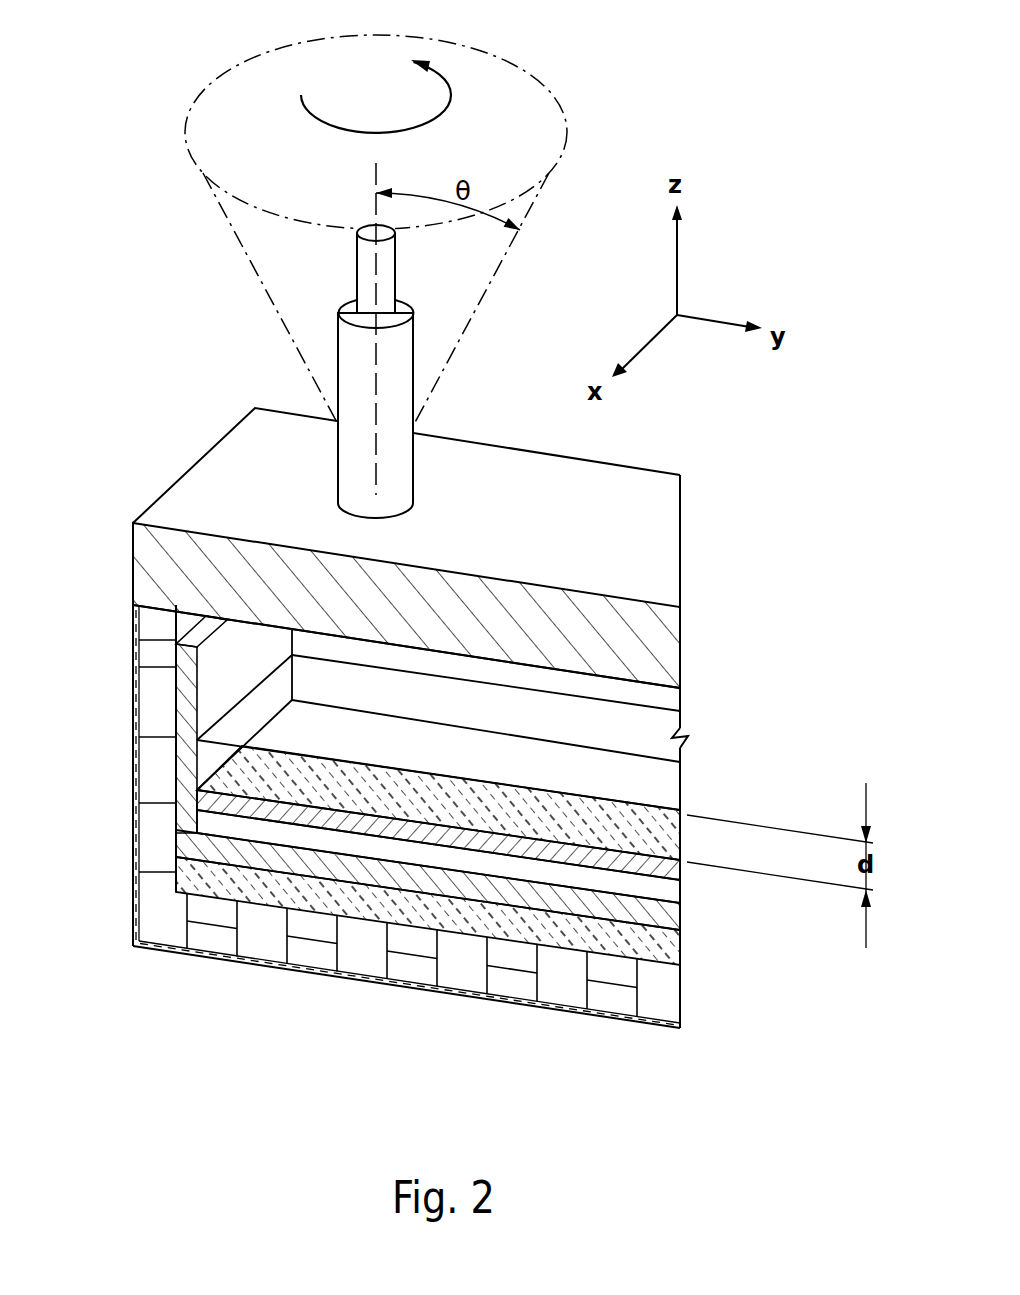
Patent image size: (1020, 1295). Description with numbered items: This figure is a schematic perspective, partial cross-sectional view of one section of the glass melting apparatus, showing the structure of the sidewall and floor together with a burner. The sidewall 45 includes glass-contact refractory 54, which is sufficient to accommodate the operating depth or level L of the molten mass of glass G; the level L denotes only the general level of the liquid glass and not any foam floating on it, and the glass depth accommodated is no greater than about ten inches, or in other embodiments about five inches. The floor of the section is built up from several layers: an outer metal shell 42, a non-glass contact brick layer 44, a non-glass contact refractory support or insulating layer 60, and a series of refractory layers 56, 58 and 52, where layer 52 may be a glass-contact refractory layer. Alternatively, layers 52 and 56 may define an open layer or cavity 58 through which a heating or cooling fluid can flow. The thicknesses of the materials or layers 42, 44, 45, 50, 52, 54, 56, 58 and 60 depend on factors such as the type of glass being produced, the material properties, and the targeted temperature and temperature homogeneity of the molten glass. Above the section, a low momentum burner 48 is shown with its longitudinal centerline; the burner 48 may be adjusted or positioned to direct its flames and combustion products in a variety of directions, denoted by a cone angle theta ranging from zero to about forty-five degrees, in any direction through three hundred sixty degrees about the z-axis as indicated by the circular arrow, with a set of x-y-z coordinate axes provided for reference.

The metal shell 42 is at (135, 840).
The non-glass contact brick layer 44 is at (368, 952).
The sidewall 45 is at (158, 775).
The low momentum burner 48 is at (357, 368).
The top layer 50 is at (640, 653).
The refractory layer 52 is at (653, 870).
The glass-contact refractory 54 is at (188, 722).
The refractory layer 56 is at (653, 937).
The refractory layer 58 is at (652, 893).
The non-glass contact refractory support or insulating layer 60 is at (273, 900).
The operating depth or level of molten glass L is at (637, 807).
The molten mass of glass G is at (652, 818).